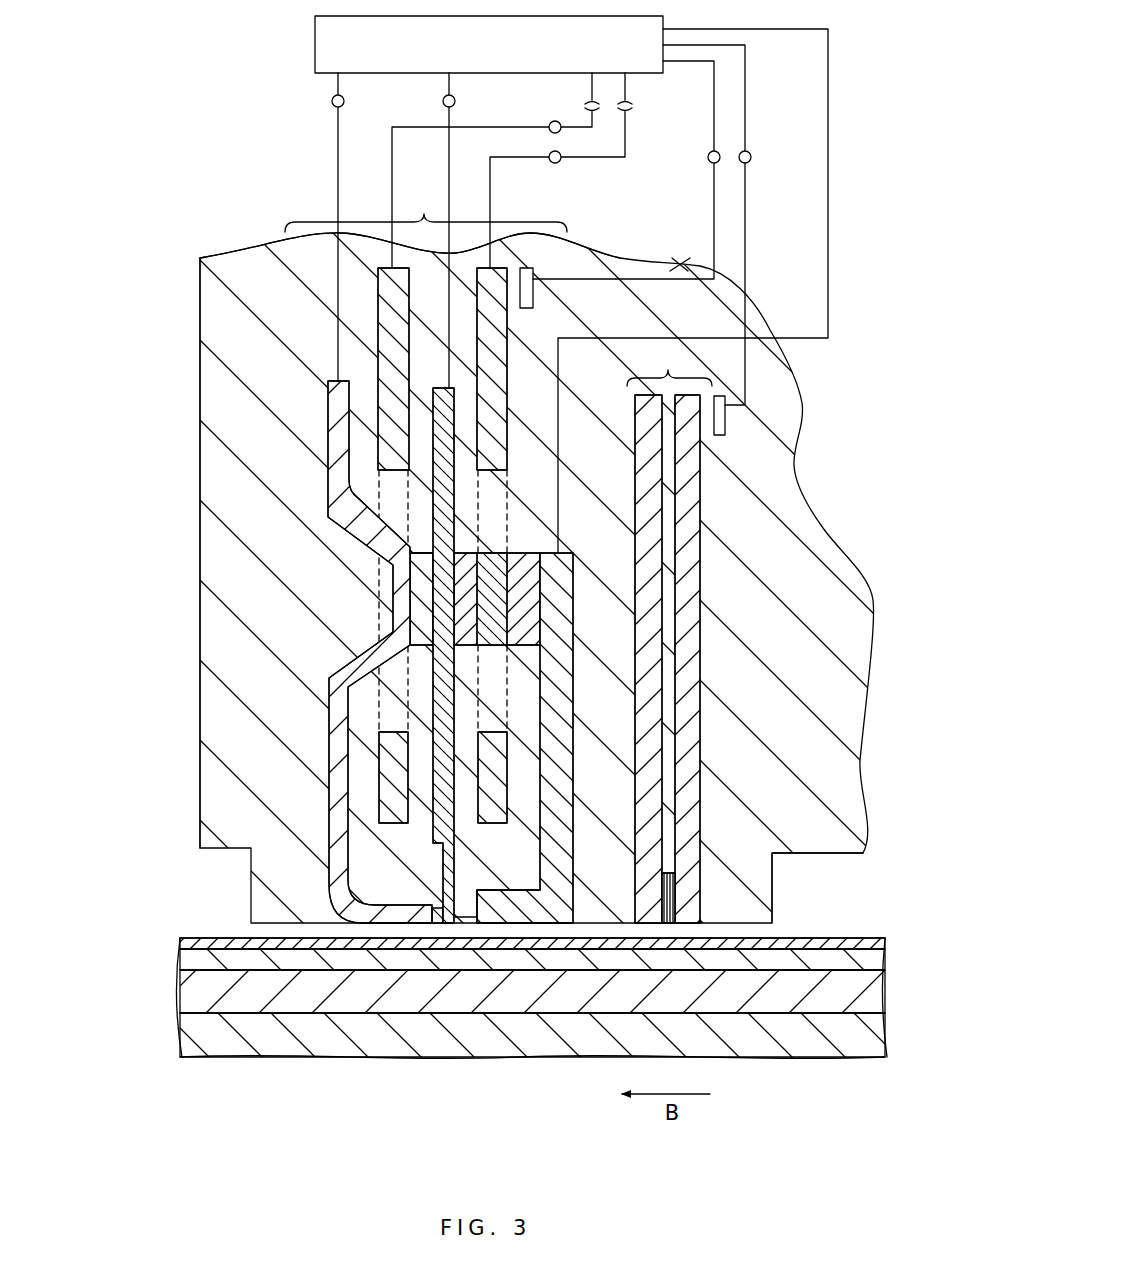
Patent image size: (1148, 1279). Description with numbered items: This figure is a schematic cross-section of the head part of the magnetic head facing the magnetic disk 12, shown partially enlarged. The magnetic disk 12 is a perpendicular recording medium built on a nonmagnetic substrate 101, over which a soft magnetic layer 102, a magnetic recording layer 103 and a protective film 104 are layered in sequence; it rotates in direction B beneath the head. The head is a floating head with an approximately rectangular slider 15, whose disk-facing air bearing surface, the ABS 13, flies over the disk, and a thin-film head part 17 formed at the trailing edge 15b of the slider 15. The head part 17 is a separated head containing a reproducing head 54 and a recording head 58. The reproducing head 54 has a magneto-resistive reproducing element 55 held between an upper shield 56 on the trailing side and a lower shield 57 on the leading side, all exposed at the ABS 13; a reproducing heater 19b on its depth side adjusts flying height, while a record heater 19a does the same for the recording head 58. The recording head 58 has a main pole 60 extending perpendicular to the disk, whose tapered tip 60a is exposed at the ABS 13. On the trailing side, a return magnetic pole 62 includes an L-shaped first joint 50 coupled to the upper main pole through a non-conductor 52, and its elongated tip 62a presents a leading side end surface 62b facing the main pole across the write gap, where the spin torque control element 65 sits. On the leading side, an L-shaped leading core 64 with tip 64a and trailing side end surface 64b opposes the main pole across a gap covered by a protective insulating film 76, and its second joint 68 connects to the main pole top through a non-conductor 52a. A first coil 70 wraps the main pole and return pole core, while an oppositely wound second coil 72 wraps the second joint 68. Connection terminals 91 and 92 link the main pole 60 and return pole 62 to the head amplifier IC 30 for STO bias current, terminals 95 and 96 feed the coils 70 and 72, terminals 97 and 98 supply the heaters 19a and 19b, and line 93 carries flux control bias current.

The magnetic disk 12 is at (493, 1033).
The ABS 13 is at (803, 856).
The slider 15 is at (795, 366).
The trailing edge 15b is at (200, 465).
The head part 17 is at (680, 262).
The record heater 19a is at (533, 290).
The reproducing heater 19b is at (722, 435).
The head amplifier IC 30 is at (315, 47).
The first joint 50 is at (400, 593).
The non-conductor 52 is at (418, 575).
The non-conductor 52a is at (500, 596).
The reproducing head 54 is at (669, 364).
The reproducing element 55 is at (668, 895).
The upper shield 56 is at (692, 596).
The lower shield 57 is at (655, 553).
The recording head 58 is at (426, 208).
The main pole 60 is at (446, 834).
The tip 60a is at (450, 910).
The return magnetic pole 62 is at (322, 705).
The tip 62a is at (373, 915).
The leading side end surface 62b is at (437, 915).
The leading core 64 is at (575, 676).
The tip 64a is at (537, 908).
The trailing side end surface 64b is at (470, 897).
The spin torque control element 65 is at (433, 910).
The second joint 68 is at (548, 553).
The first coil 70 is at (387, 305).
The second coil 72 is at (507, 373).
The protective insulating film 76 is at (233, 268).
The connection terminal 91 is at (443, 101).
The connection terminal 92 is at (332, 101).
The line 93 is at (834, 157).
The terminal 95 is at (549, 124).
The terminal 96 is at (560, 162).
The connection terminal 97 is at (708, 157).
The connection terminal 98 is at (751, 157).
The substrate 101 is at (185, 1030).
The soft magnetic layer 102 is at (180, 990).
The magnetic recording layer 103 is at (178, 957).
The protective film 104 is at (178, 942).